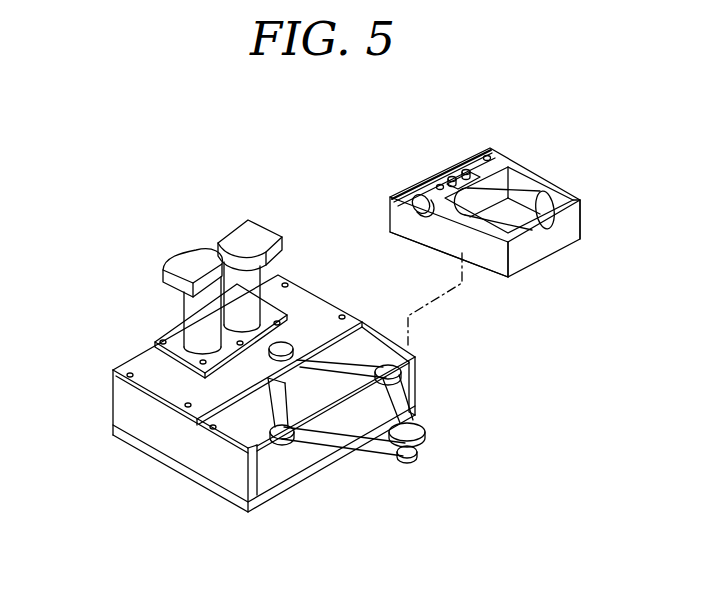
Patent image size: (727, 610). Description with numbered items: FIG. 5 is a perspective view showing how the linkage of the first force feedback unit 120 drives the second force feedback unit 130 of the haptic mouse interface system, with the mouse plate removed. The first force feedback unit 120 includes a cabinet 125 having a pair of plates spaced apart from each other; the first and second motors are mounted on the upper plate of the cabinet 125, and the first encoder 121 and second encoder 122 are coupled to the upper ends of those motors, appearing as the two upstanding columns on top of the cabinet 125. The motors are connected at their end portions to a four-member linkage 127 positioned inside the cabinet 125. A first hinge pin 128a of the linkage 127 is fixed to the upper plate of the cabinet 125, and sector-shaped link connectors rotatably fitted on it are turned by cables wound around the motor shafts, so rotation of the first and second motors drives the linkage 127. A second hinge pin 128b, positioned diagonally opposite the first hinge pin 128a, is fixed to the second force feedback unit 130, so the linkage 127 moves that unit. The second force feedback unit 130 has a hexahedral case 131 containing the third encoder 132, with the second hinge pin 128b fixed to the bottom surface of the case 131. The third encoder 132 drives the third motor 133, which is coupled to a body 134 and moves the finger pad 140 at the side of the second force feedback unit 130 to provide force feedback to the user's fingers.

The first force feedback unit 120 is at (150, 306).
The first encoder 121 is at (192, 258).
The second encoder 122 is at (245, 228).
The cabinet 125 is at (143, 363).
The four-member linkage 127 is at (361, 365).
The first hinge pin 128a is at (284, 343).
The second hinge pin 128b is at (420, 432).
The second force feedback unit 130 is at (535, 173).
The hexahedral case 131 is at (485, 250).
The third encoder 132 is at (578, 202).
The third motor 133 is at (547, 212).
The body 134 is at (496, 155).
The left finger pad 140 is at (412, 195).